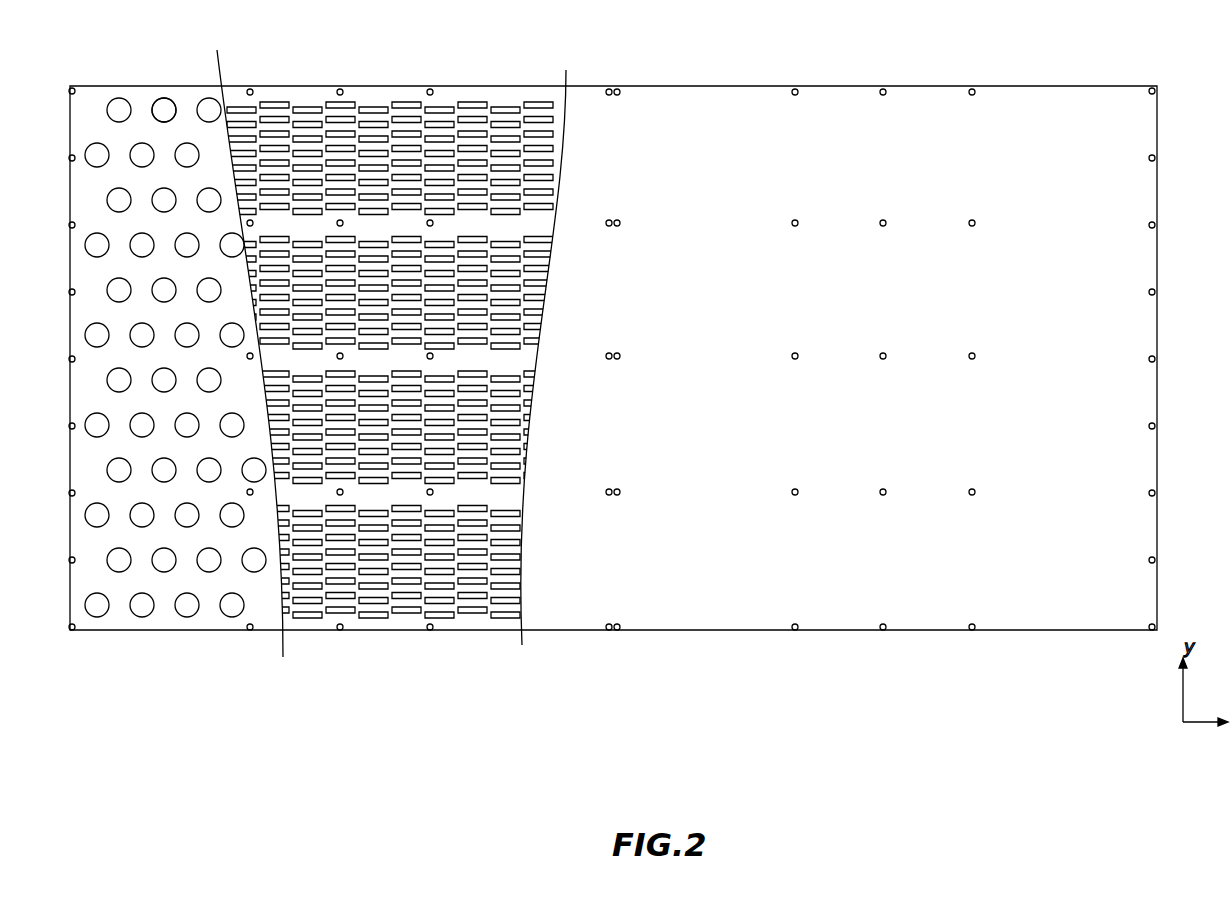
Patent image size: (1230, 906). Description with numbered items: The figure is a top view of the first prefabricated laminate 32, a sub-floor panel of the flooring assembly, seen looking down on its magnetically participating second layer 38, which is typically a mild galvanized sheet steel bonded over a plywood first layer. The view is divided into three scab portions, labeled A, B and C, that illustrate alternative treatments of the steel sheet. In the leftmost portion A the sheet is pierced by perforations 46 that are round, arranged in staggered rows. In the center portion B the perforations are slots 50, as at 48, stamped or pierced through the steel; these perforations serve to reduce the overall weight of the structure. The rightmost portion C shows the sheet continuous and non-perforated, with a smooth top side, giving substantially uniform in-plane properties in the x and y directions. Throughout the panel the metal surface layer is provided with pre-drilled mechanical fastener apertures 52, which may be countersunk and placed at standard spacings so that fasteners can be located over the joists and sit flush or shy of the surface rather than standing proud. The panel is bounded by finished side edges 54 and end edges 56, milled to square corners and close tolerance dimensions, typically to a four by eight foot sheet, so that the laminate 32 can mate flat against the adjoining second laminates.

The first prefabricated laminate 32 is at (535, 615).
The second layer 38 is at (705, 585).
The perforations 46 is at (100, 103).
The perforations 48 is at (155, 102).
The slots 50 is at (303, 106).
The mechanical fastener apertures 52 is at (794, 497).
The side edges 54 is at (402, 632).
The end edges 56 is at (1158, 455).
The first zone A is at (145, 125).
The second zone B is at (468, 123).
The third zone C is at (1050, 112).